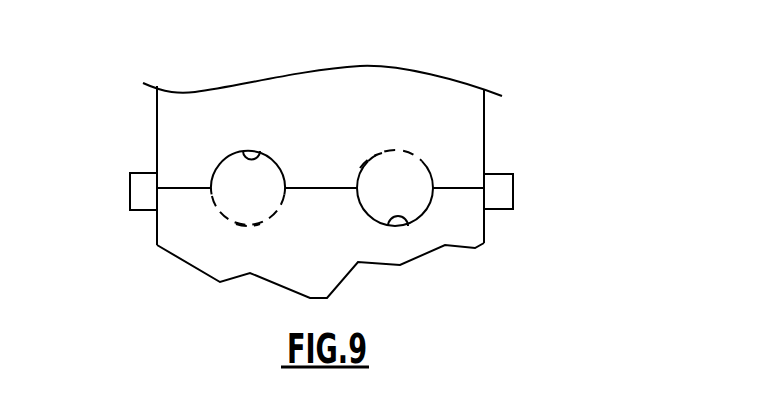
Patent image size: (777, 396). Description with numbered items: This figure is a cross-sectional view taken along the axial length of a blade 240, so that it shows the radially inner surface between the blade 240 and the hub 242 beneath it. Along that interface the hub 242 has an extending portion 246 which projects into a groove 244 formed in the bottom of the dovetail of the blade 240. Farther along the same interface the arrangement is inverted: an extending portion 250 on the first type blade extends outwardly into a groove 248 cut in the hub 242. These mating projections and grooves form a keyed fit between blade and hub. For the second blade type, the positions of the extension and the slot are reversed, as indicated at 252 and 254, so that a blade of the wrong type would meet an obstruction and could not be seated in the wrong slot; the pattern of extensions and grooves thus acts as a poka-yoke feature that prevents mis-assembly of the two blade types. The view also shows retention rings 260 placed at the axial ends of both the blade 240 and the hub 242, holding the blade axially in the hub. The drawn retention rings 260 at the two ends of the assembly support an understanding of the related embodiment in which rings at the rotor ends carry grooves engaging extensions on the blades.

The blade 240 is at (408, 92).
The hub 242 is at (340, 256).
The groove 244 is at (260, 150).
The extending portion 246 is at (235, 178).
The groove 248 is at (408, 226).
The extending portion 250 is at (402, 185).
The reversed extension position 252 is at (248, 227).
The reversed slot position 254 is at (375, 160).
The retention rings 260 is at (142, 190).